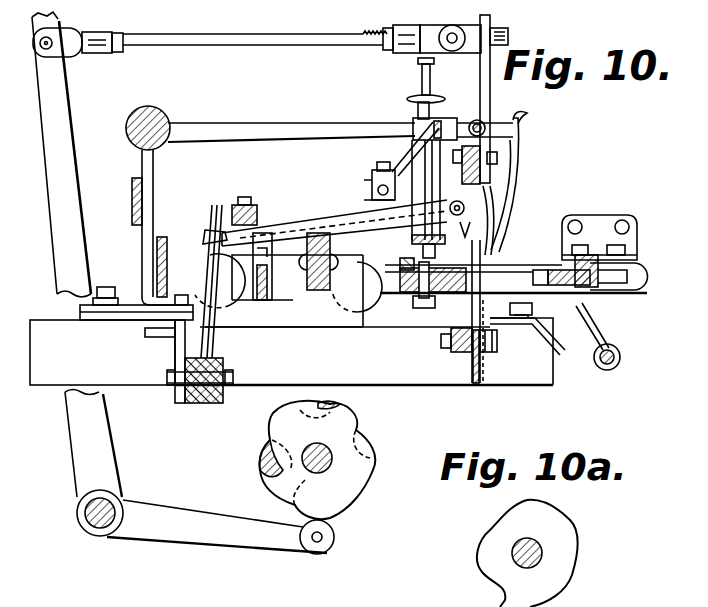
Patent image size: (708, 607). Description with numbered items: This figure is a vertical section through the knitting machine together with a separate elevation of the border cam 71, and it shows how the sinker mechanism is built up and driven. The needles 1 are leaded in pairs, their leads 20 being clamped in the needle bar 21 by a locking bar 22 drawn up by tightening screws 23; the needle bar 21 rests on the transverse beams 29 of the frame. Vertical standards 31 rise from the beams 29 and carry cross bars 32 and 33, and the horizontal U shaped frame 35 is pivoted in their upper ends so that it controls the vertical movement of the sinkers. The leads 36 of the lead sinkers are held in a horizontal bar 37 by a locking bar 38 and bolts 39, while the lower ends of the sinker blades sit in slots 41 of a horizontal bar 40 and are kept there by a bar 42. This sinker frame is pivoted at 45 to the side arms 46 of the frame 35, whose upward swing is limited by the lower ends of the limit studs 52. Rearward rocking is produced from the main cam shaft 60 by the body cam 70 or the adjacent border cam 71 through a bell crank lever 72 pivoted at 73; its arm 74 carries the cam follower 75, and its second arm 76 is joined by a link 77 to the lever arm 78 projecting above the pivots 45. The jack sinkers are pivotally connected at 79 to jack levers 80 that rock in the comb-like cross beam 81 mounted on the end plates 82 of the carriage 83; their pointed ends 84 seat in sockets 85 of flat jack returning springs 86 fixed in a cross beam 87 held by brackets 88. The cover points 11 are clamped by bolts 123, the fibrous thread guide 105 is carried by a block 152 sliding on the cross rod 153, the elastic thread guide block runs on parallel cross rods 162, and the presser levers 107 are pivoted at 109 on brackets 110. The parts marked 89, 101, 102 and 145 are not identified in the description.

In FIG. 10, the needles 1 is at (498, 265).
In FIG. 10, the cover points 11 is at (522, 263).
In FIG. 10, the leads 20 is at (441, 292).
In FIG. 10, the needle bar 21 is at (399, 300).
In FIG. 10, the locking bar 22 is at (410, 244).
In FIG. 10, the tightening screws 23 is at (418, 310).
In FIG. 10, the transverse beams 29 is at (553, 379).
In FIG. 10, the vertical standards 31 is at (154, 187).
In FIG. 10, the cross bar 32 is at (167, 246).
In FIG. 10, the cross bar 33 is at (132, 182).
In FIG. 10, the horizontal U shaped frame 35 is at (168, 121).
In FIG. 10, the leads 36 is at (462, 172).
In FIG. 10, the horizontal bar 37 is at (456, 201).
In FIG. 10, the locking bar 38 is at (500, 150).
In FIG. 10, the bolts 39 is at (412, 151).
In FIG. 10, the horizontal bar 40 is at (458, 352).
In FIG. 10, the slots 41 is at (490, 342).
In FIG. 10, the bar 42 is at (481, 364).
In FIG. 10, the pivots 45 is at (477, 120).
In FIG. 10, the side arms 46 is at (347, 128).
In FIG. 10, the limit studs 52 is at (434, 66).
In FIG. 10, the main cam shaft 60 is at (318, 473).
In FIG. 10A, the main cam shaft 60 is at (514, 566).
In FIG. 10, the cam 70 is at (374, 476).
In FIG. 10, the border cam 71 is at (264, 470).
In FIG. 10A, the border cam 71 is at (572, 580).
In FIG. 10, the bell crank lever 72 is at (122, 500).
In FIG. 10, the pivot 73 is at (92, 530).
In FIG. 10, the arm 74 is at (186, 543).
In FIG. 10, the cam follower 75 is at (334, 538).
In FIG. 10, the second arm 76 is at (60, 224).
In FIG. 10, the link 77 is at (262, 46).
In FIG. 10, the lever arm 78 is at (490, 94).
In FIG. 10, the pivotal connection 79 is at (492, 200).
In FIG. 10, the jack levers 80 is at (356, 218).
In FIG. 10, the cross beam 81 is at (318, 290).
In FIG. 10, the end plates 82 is at (264, 335).
In FIG. 10, the carriage 83 is at (358, 332).
In FIG. 10, the pointed ends 84 is at (210, 242).
In FIG. 10, the sockets 85 is at (214, 212).
In FIG. 10, the jack returning springs 86 is at (205, 230).
In FIG. 10, the cross beam 87 is at (175, 402).
In FIG. 10, the brackets 88 is at (172, 345).
In FIG. 10, the disc 89 is at (352, 290).
In FIG. 10, the nut 101 is at (248, 197).
In FIG. 10, the block 102 is at (258, 222).
In FIG. 10, the thread guide 105 is at (527, 116).
In FIG. 10, the levers 107 is at (600, 330).
In FIG. 10, the pivots 109 is at (620, 352).
In FIG. 10, the brackets 110 is at (555, 336).
In FIG. 10, the bolts 123 is at (562, 240).
In FIG. 10, the lever 145 is at (284, 603).
In FIG. 10, the block 152 is at (378, 166).
In FIG. 10, the cross rod 153 is at (372, 188).
In FIG. 10, the parallel cross rods 162 is at (622, 220).